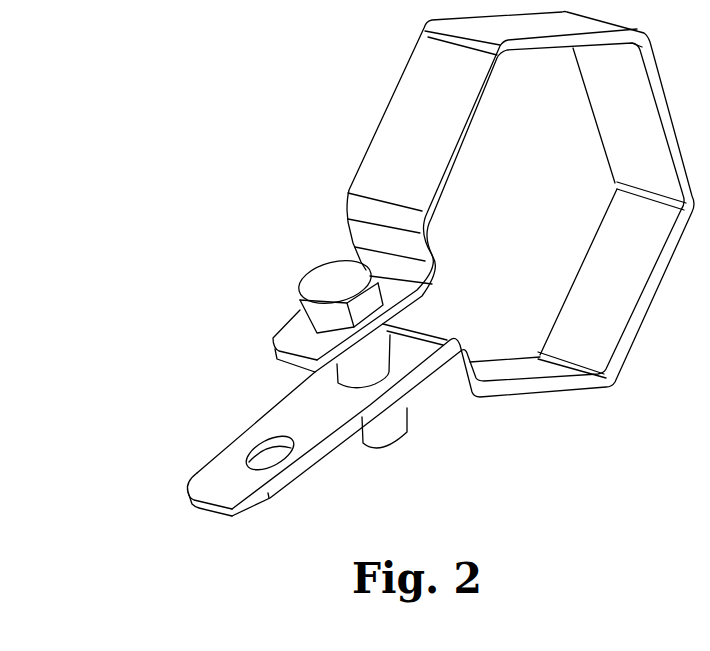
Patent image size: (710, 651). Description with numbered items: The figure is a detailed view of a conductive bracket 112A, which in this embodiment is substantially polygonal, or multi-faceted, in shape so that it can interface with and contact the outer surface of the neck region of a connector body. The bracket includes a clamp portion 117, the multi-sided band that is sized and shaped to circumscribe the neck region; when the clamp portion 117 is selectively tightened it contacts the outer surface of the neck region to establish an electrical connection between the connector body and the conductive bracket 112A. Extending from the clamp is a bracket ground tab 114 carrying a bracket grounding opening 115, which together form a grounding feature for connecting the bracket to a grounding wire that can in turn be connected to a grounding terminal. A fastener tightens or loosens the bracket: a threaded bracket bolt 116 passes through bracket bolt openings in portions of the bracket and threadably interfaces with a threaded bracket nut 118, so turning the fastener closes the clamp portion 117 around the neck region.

The conductive bracket 112A is at (189, 94).
The bracket ground tab 114 is at (216, 487).
The bracket grounding opening 115 is at (268, 450).
The threaded bracket bolt 116 is at (332, 282).
The clamp portion 117 is at (418, 90).
The threaded bracket nut 118 is at (402, 395).